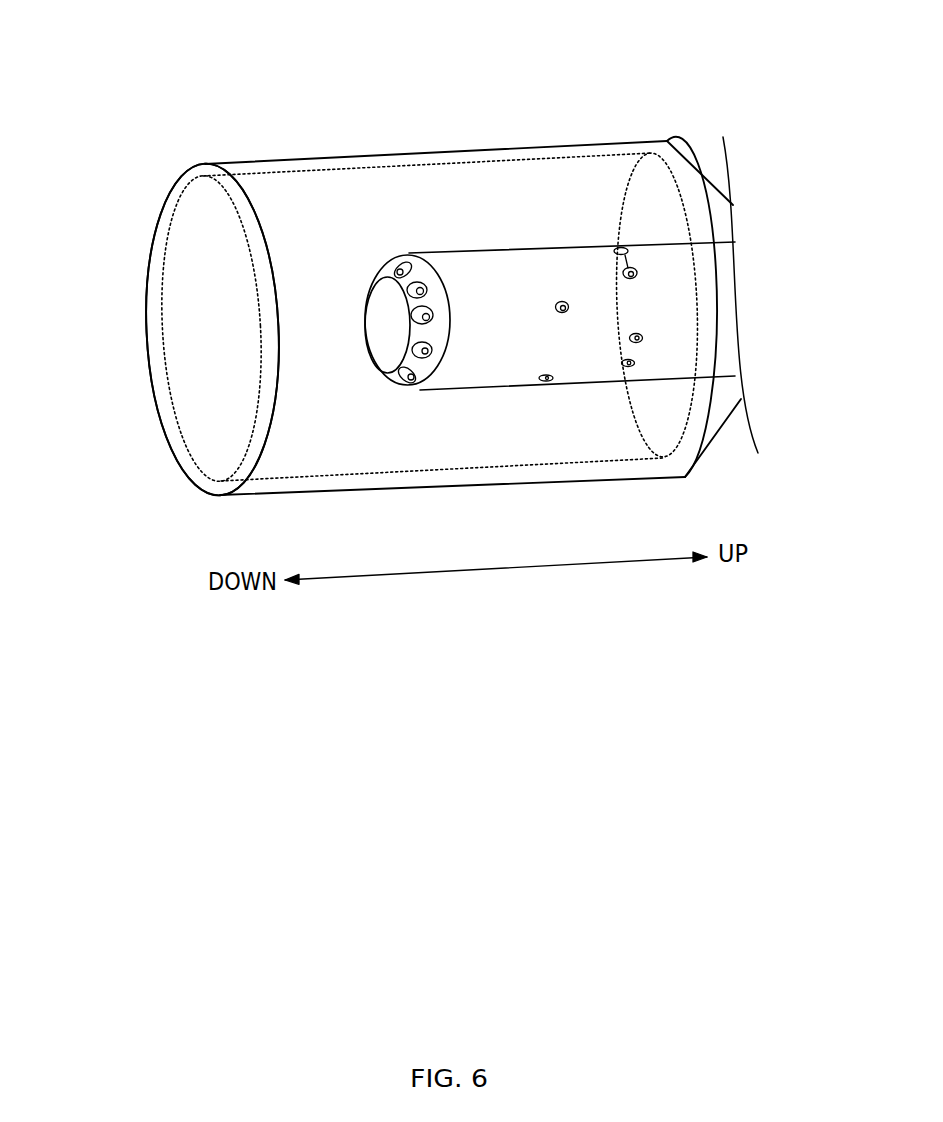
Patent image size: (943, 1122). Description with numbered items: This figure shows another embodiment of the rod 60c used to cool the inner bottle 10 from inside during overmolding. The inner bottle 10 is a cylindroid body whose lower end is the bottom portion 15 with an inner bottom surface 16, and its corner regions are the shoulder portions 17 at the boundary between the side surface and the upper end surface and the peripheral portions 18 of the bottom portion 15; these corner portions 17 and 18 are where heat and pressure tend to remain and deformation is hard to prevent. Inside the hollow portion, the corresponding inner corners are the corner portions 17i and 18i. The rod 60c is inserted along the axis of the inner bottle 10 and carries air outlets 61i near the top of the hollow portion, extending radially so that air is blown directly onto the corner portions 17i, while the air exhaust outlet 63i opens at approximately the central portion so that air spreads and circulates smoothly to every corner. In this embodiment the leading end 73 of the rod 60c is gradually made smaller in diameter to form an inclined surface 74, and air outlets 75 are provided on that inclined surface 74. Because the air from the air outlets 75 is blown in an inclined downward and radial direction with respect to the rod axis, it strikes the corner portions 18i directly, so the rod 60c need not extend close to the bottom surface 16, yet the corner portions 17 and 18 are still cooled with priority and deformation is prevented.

The inner bottle 10 is at (392, 178).
The bottom portion 15 is at (195, 320).
The inner bottom surface 16 is at (240, 420).
The shoulder portion 17 is at (668, 141).
The corner portion 17i is at (702, 217).
The peripheral portion of the bottom portion 18 is at (263, 205).
The corner portion 18i is at (188, 452).
The rod 60c is at (518, 278).
The air outlet 61i is at (622, 247).
The air exhaust outlet 63i is at (545, 383).
The leading end 73 is at (392, 331).
The inclined surface 74 is at (414, 276).
The air outlets 75 is at (406, 268).